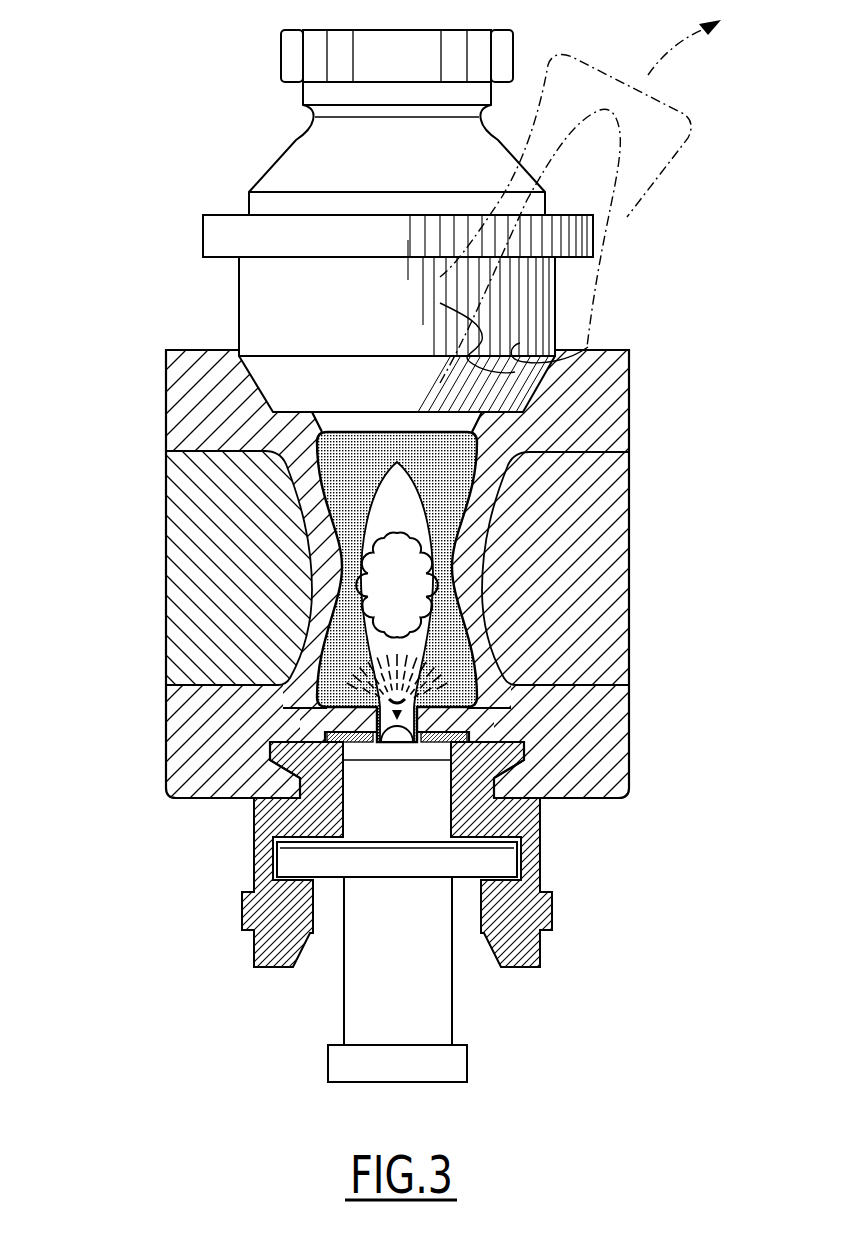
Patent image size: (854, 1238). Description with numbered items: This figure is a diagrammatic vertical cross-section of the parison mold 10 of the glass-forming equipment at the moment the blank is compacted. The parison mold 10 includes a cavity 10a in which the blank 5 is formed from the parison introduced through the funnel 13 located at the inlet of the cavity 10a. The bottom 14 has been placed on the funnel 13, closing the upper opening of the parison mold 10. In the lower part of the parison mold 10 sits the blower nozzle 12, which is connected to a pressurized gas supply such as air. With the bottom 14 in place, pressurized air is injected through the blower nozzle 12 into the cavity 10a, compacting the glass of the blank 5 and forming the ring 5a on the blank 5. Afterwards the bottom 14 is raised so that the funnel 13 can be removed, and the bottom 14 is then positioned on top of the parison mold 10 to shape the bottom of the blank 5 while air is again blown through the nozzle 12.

The blank 5 is at (340, 670).
The ring 5a is at (377, 713).
The parison mold 10 is at (655, 507).
The cavity 10a is at (342, 465).
The blower nozzle 12 is at (420, 922).
The funnel 13 is at (258, 315).
The bottom 14 is at (315, 163).